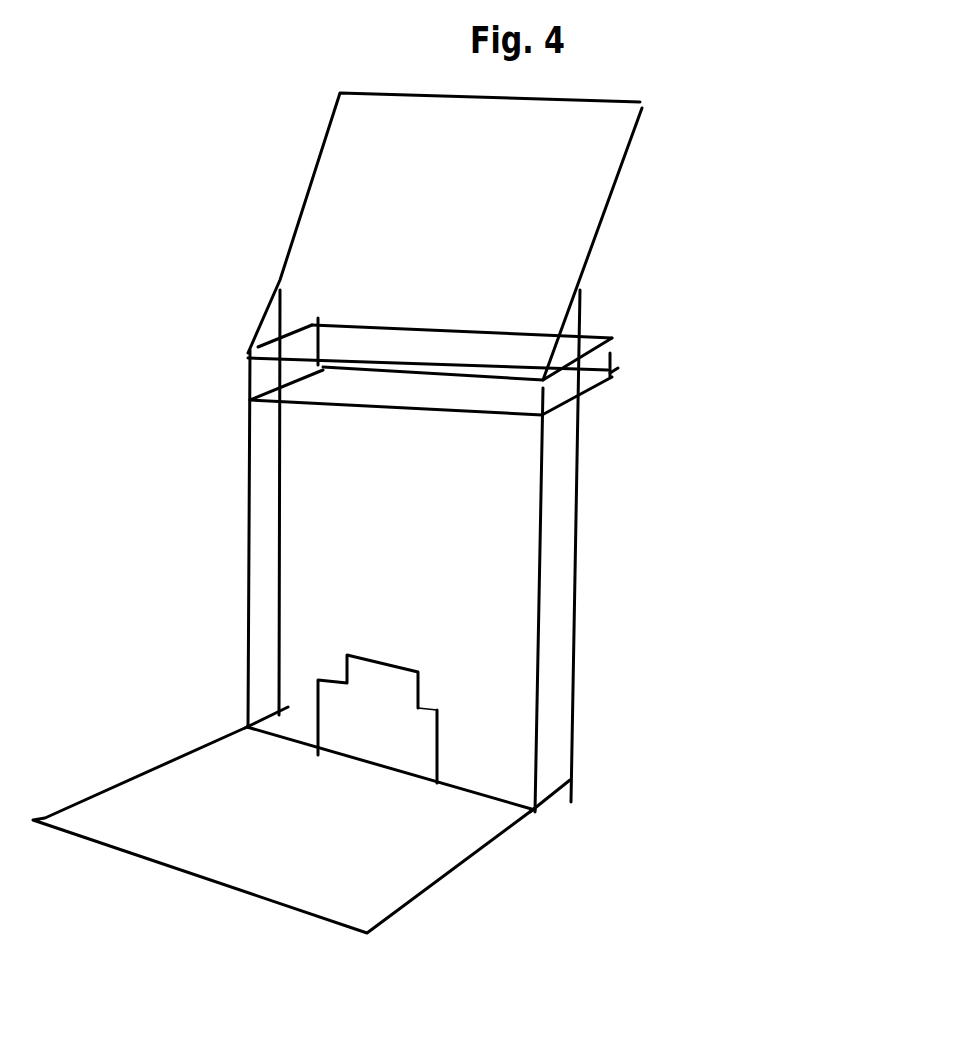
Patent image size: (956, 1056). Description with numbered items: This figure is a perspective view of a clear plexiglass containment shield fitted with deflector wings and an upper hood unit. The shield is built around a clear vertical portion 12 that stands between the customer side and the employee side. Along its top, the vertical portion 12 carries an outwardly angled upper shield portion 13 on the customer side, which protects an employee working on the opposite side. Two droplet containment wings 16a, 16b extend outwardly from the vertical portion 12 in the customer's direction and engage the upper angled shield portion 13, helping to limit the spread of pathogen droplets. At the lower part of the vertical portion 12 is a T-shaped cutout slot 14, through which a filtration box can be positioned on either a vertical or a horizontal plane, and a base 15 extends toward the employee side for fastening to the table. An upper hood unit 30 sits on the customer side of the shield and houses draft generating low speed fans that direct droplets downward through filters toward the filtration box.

The vertical portion 12 is at (313, 597).
The upper angled shield portion 13 is at (527, 223).
The cutout slot 14 is at (390, 717).
The base 15 is at (403, 857).
The droplet containment wing 16a is at (263, 485).
The droplet containment wing 16b is at (548, 533).
The upper hood unit 30 is at (610, 357).